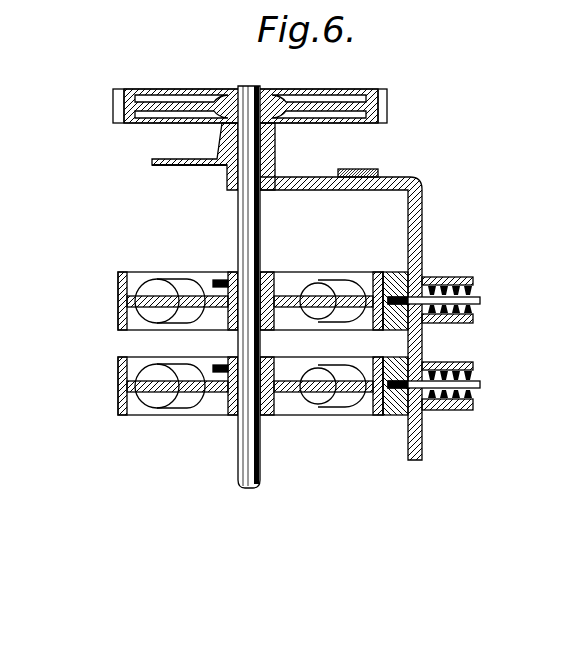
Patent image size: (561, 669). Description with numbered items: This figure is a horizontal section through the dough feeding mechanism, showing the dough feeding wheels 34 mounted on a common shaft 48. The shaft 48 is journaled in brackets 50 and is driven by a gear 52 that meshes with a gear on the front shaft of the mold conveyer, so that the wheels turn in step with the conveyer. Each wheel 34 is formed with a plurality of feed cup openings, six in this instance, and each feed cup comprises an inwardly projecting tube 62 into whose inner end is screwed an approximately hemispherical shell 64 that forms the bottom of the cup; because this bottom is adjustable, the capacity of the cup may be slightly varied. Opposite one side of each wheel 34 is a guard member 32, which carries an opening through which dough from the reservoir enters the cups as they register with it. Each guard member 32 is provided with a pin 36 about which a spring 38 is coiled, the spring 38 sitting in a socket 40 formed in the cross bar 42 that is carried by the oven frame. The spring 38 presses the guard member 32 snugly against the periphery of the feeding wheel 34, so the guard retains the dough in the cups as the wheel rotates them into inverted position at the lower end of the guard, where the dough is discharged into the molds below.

The guard member 32 is at (412, 262).
The dough feeding wheel 34 is at (118, 297).
The pin 36 is at (480, 303).
The spring 38 is at (447, 320).
The socket 40 is at (473, 410).
The cross bar 42 is at (422, 427).
The shaft 48 is at (265, 483).
The bracket 50 is at (276, 143).
The gear 52 is at (389, 101).
The inwardly projecting tube 62 is at (343, 398).
The hemispherical shell 64 is at (310, 398).